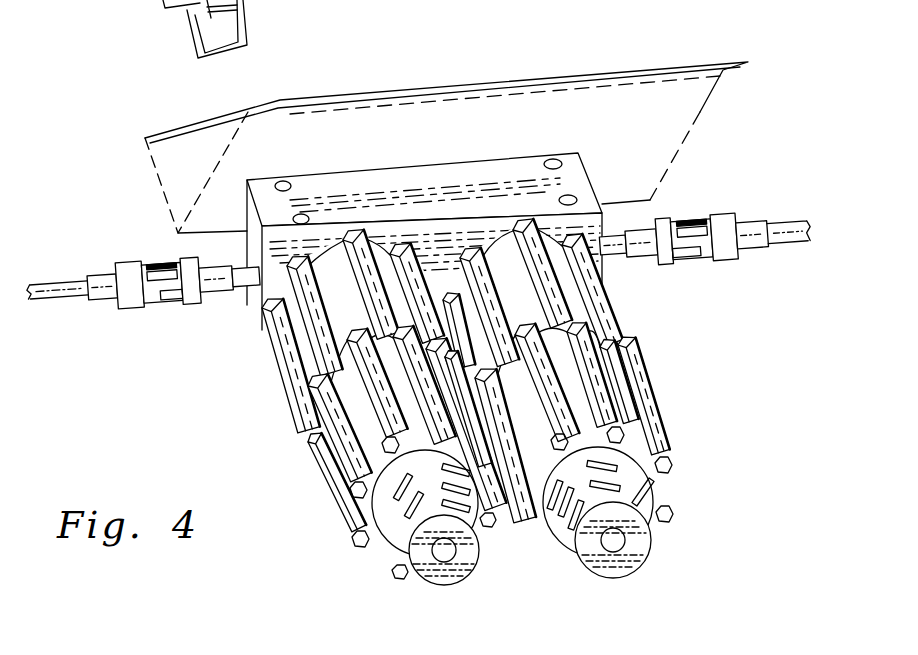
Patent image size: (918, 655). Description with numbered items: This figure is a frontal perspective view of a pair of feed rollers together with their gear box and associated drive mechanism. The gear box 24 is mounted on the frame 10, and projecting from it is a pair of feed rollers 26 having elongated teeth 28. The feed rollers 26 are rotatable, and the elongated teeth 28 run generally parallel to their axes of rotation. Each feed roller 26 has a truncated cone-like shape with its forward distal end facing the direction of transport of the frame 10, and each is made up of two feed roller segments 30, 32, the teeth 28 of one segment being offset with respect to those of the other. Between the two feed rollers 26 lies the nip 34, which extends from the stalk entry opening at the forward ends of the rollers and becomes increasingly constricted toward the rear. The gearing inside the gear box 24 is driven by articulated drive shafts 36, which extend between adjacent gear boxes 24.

The frame 10 is at (663, 73).
The gear box 24 is at (590, 244).
The feed roller 26 is at (445, 572).
The elongated teeth 28 is at (408, 262).
The feed roller segment 30 is at (360, 503).
The feed roller segment 32 is at (318, 367).
The nip 34 is at (508, 520).
The articulated drive shaft 36 is at (75, 297).